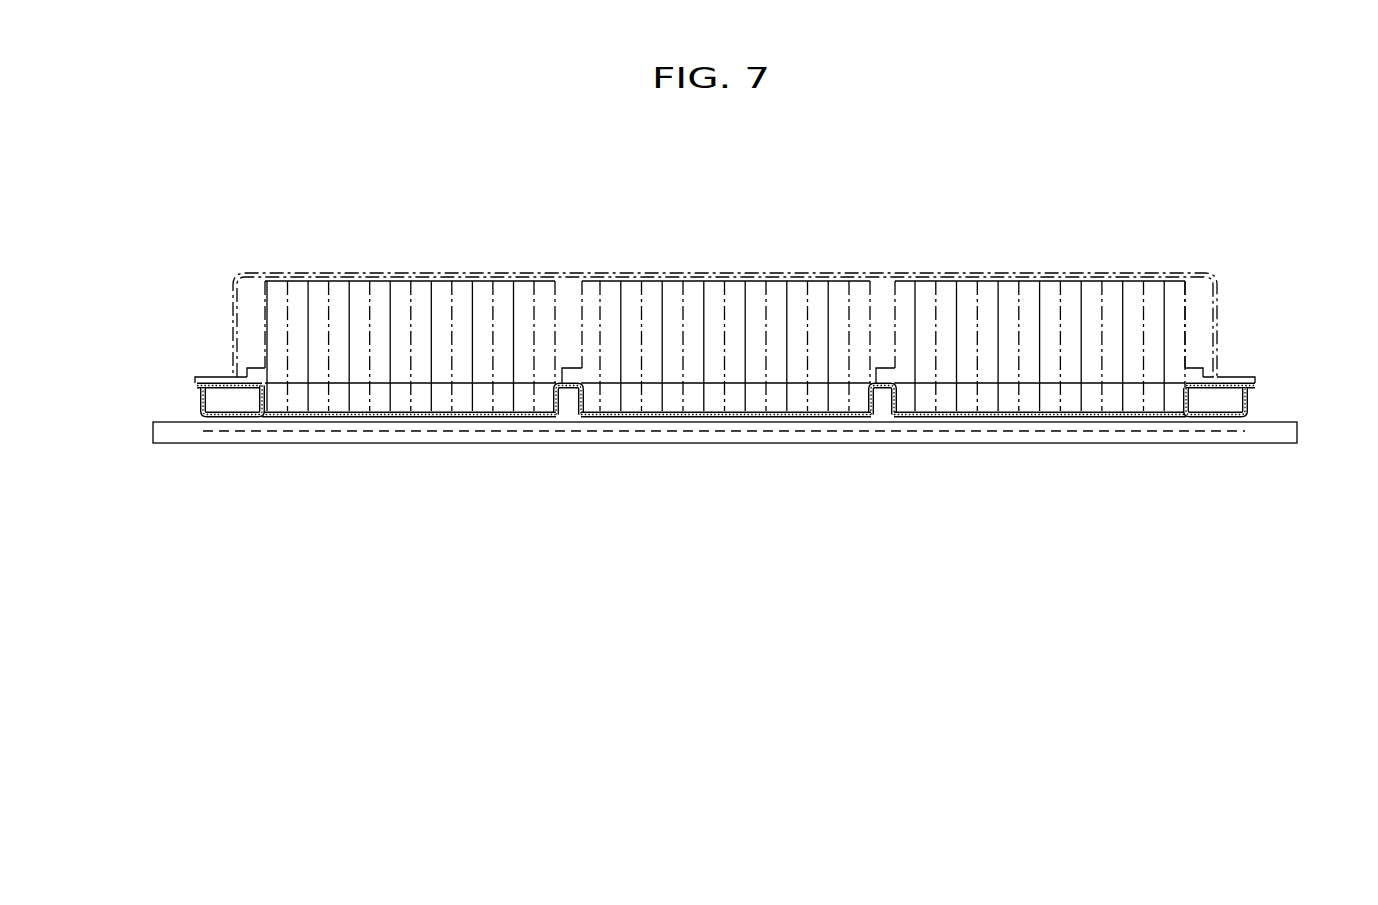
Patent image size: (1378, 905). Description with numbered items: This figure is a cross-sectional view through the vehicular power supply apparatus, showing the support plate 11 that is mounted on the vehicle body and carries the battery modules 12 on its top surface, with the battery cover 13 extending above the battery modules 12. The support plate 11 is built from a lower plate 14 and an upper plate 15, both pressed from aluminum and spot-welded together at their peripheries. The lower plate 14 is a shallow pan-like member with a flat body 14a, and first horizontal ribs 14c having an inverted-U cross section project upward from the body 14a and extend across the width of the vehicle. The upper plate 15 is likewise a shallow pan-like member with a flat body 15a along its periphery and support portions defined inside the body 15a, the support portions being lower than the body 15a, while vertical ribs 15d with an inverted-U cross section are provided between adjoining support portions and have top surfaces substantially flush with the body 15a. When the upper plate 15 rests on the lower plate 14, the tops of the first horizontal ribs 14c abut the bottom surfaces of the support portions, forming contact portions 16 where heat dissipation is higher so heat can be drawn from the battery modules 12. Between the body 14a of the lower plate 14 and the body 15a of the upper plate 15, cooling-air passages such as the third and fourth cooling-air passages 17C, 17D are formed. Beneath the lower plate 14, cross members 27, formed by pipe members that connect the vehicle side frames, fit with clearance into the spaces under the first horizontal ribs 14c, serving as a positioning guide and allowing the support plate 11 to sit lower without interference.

The support plate 11 is at (730, 470).
The battery module 12 is at (725, 294).
The battery cover 13 is at (1217, 292).
The lower plate 14 is at (730, 451).
The body of lower plate 14a is at (202, 397).
The first horizontal rib 14c is at (242, 407).
The upper plate 15 is at (596, 432).
The body of upper plate 15a is at (225, 380).
The vertical rib 15d is at (549, 396).
The contact portion 16 is at (365, 418).
The third cooling-air passage 17C is at (1230, 405).
The fourth cooling-air passage 17D is at (218, 404).
The cross member 27 is at (960, 445).